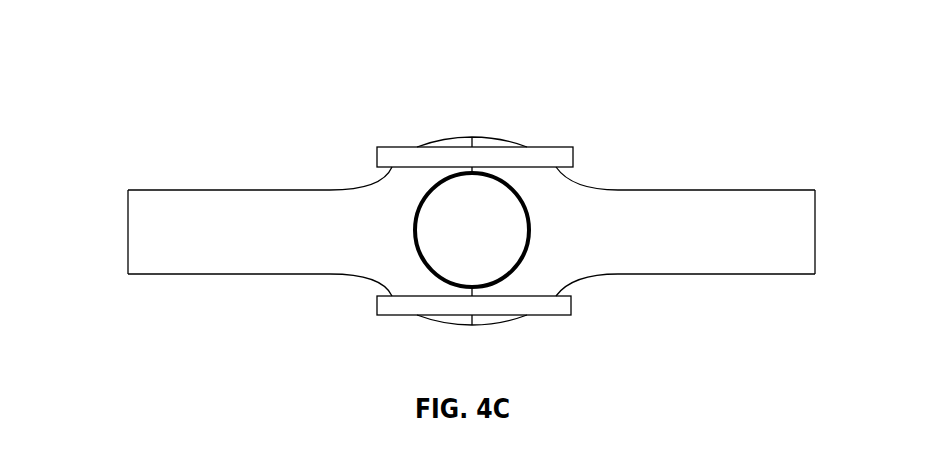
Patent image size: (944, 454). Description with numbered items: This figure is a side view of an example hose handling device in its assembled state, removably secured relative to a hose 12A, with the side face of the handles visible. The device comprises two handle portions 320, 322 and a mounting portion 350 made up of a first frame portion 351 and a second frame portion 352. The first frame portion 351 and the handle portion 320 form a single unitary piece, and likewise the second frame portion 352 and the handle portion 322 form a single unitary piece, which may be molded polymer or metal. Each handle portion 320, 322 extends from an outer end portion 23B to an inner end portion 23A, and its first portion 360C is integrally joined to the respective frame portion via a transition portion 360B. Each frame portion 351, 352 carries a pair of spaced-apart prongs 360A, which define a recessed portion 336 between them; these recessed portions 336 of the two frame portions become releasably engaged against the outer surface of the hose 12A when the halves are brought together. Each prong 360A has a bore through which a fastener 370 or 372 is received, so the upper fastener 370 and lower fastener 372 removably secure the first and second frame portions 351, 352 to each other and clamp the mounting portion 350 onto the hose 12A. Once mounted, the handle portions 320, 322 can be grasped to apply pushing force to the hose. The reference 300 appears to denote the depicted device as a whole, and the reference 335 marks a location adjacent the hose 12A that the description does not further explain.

The hose 12A is at (472, 230).
The inner end portion 23A is at (357, 203).
The outer end portion 23B is at (127, 243).
The hose clamp assembly 300 is at (475, 217).
The handle portion 320 is at (155, 280).
The handle portion 322 is at (794, 184).
The gap between band and hose 335 is at (415, 228).
The recessed portion 336 is at (526, 258).
The mounting portion 350 is at (477, 109).
The first frame portion 351 is at (421, 139).
The second frame portion 352 is at (524, 139).
The prong 360A is at (487, 137).
The transition portion 360B is at (372, 184).
The first portion 360C is at (471, 232).
The fastener 370 is at (559, 146).
The fastener 372 is at (509, 323).